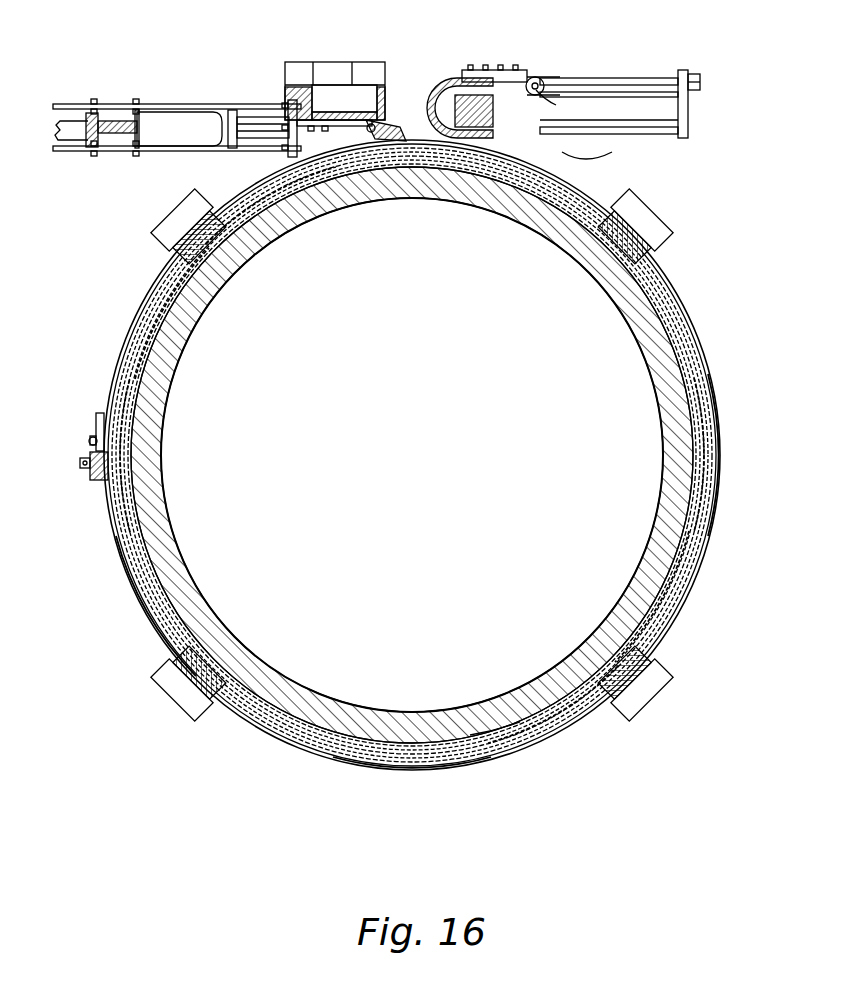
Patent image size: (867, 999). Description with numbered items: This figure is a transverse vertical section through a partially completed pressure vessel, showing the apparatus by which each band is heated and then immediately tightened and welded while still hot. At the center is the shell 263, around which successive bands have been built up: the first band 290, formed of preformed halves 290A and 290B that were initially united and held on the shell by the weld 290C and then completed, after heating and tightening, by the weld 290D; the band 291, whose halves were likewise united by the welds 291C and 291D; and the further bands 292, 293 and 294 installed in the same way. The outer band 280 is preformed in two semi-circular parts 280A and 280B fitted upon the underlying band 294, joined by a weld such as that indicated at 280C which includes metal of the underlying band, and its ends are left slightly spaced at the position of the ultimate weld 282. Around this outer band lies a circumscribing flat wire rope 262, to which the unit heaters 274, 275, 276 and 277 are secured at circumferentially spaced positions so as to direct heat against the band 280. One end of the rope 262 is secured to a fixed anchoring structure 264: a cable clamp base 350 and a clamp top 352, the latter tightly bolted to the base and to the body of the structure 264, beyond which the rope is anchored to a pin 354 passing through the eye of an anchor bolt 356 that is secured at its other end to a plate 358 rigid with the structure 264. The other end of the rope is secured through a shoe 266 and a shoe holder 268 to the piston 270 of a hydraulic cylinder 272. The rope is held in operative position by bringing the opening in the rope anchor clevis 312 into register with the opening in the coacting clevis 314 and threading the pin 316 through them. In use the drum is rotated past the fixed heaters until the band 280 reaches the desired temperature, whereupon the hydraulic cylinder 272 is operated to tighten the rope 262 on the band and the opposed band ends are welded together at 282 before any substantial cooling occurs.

The flat wire rope 262 is at (684, 640).
The shell 263 is at (500, 716).
The anchoring structure 264 is at (572, 146).
The shoe 266 is at (398, 136).
The shoe holder 268 is at (338, 115).
The piston 270 is at (260, 118).
The hydraulic cylinder 272 is at (165, 125).
The unit heater 274 is at (648, 215).
The unit heater 275 is at (662, 688).
The unit heater 276 is at (168, 690).
The unit heater 277 is at (183, 222).
The band 280 is at (228, 702).
The semi-circular part of band 280A is at (128, 580).
The semi-circular part of band 280B is at (718, 430).
The band segment 280C is at (437, 765).
The weld 282 is at (440, 120).
The band 290 is at (300, 722).
The preformed half of first band 290A is at (140, 374).
The preformed half of first band 290B is at (686, 466).
The weld 290C is at (558, 692).
The weld 290D is at (262, 210).
The band 291 is at (320, 735).
The weld 291C is at (165, 300).
The weld 291D is at (655, 592).
The band 292 is at (333, 745).
The band 293 is at (363, 745).
The underlying band 294 is at (400, 757).
The rope anchor clevis 312 is at (90, 444).
The clevis 314 is at (98, 430).
The pin 316 is at (96, 478).
The cable clamp base 350 is at (540, 78).
The clamp top 352 is at (490, 72).
The pin 354 is at (568, 104).
The anchor bolt 356 is at (605, 79).
The plate 358 is at (685, 110).